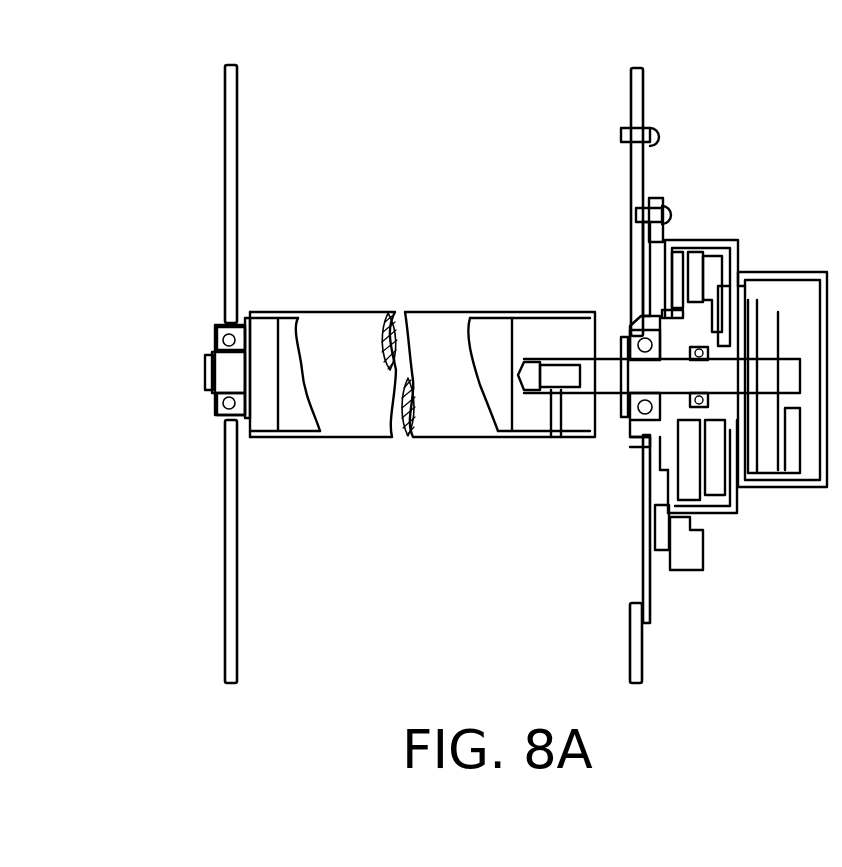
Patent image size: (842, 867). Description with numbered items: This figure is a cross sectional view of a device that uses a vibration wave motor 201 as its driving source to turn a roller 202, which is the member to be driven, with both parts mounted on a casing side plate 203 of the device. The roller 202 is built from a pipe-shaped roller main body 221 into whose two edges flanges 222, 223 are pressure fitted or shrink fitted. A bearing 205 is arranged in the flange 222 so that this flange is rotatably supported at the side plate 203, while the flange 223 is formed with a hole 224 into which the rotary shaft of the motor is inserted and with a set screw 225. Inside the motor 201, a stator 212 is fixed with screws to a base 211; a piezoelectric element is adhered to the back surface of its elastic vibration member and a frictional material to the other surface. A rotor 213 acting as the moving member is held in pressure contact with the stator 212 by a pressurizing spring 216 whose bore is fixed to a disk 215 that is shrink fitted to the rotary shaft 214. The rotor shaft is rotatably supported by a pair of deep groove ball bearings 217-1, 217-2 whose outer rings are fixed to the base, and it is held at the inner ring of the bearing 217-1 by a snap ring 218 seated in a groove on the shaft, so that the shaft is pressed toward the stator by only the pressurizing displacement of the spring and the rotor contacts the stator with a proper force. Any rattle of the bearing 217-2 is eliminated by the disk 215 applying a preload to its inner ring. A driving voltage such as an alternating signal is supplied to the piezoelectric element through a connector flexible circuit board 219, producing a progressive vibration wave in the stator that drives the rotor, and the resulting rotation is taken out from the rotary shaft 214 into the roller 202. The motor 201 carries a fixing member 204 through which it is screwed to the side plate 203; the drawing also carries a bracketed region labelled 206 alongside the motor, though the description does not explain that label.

The vibration wave motor 201 is at (738, 98).
The roller 202 is at (412, 318).
The casing side plate 203 is at (237, 130).
The fixing member 204 is at (636, 190).
The bearing 205 is at (216, 326).
The motor unit 206 is at (830, 98).
The base 211 is at (660, 493).
The stator 212 is at (700, 497).
The rotor 213 is at (722, 480).
The rotary shaft 214 is at (600, 381).
The disk 215 is at (757, 437).
The pressurizing spring 216 is at (740, 277).
The deep groove ball bearing 217-1 is at (634, 322).
The deep groove ball bearing 217-2 is at (695, 348).
The snap ring 218 is at (621, 428).
The connector flexible circuit board 219 is at (686, 560).
The roller main body 221 is at (487, 311).
The flange 222 is at (265, 425).
The flange 223 is at (530, 424).
The hole 224 is at (530, 380).
The set screw 225 is at (553, 428).